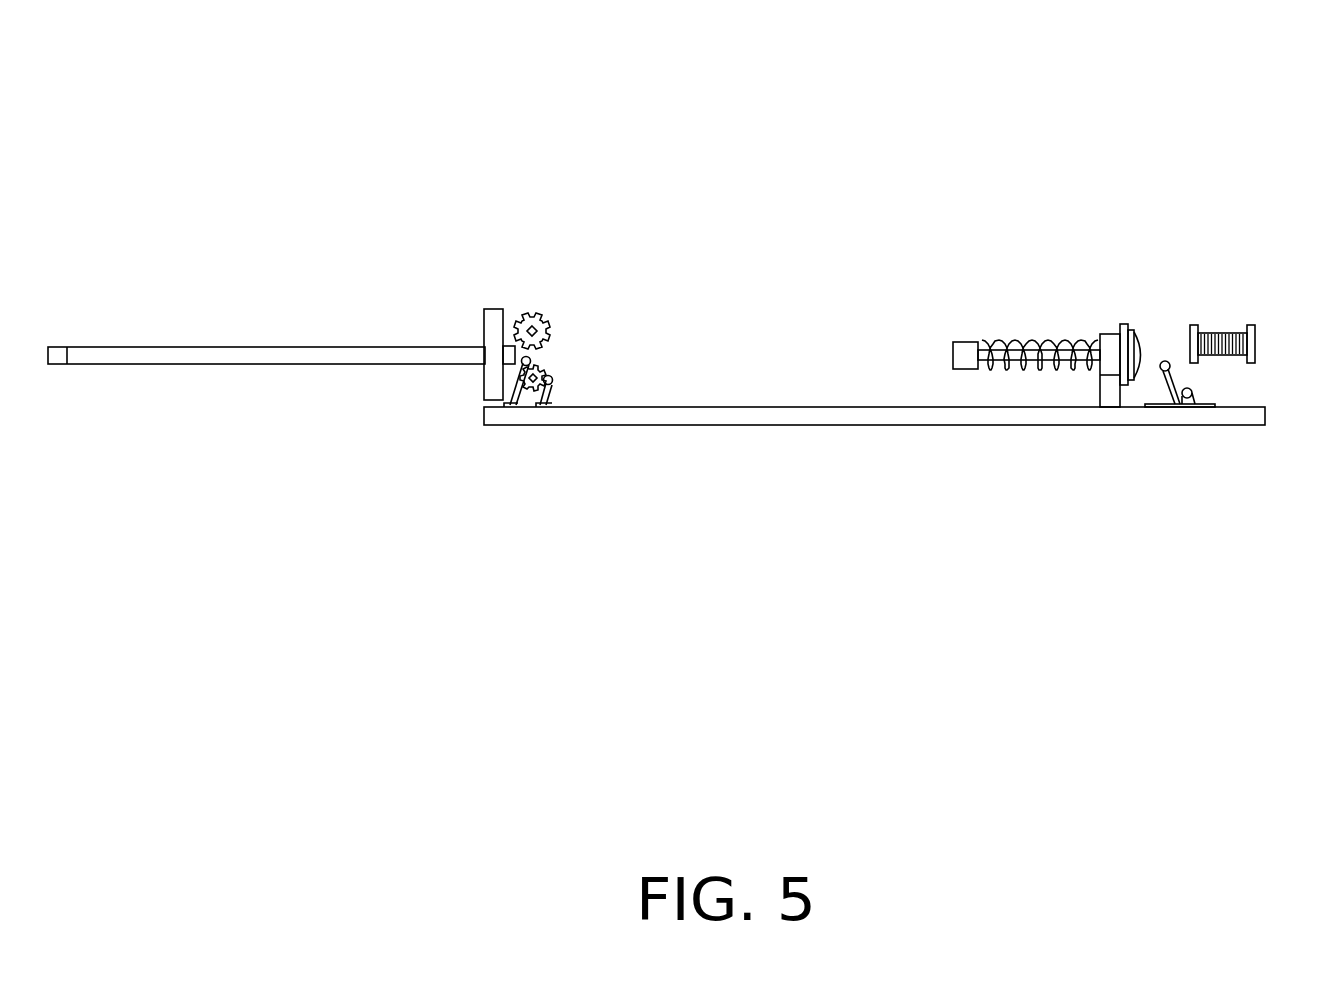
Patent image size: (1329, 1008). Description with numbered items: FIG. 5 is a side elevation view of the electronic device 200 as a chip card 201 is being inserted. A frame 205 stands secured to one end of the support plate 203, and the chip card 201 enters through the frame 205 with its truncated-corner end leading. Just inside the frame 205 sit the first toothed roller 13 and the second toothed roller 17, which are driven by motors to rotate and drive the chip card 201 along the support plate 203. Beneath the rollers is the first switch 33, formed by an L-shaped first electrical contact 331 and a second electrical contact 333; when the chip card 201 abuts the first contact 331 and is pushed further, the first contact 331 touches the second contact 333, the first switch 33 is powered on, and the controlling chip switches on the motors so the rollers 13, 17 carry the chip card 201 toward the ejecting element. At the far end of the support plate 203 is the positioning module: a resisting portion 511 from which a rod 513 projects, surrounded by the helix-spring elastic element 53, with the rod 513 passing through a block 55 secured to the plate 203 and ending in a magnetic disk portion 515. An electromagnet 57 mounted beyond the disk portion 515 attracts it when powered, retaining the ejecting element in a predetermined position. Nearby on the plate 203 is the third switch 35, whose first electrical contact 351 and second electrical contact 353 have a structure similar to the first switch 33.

The electronic device 200 is at (712, 64).
The chip card 201 is at (170, 357).
The support plate 203 is at (748, 410).
The frame 205 is at (490, 316).
The first toothed roller 13 is at (540, 312).
The second toothed roller 17 is at (548, 362).
The first switch 33 is at (566, 453).
The first electrical contact 331 is at (523, 405).
The second electrical contact 333 is at (556, 378).
The third switch 35 is at (1190, 457).
The first electrical contact 351 is at (1160, 372).
The second electrical contact 353 is at (1190, 400).
The elastic element 53 is at (1000, 345).
The resisting portion 511 is at (963, 340).
The rod 513 is at (1050, 350).
The disk portion 515 is at (1125, 330).
The block 55 is at (1107, 388).
The electromagnet 57 is at (1232, 330).